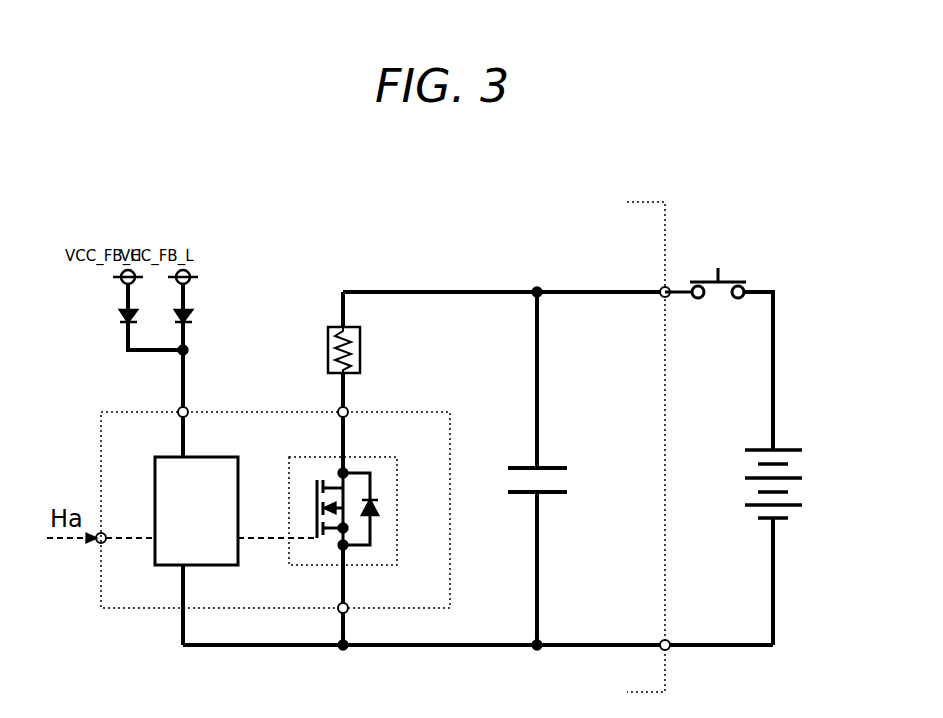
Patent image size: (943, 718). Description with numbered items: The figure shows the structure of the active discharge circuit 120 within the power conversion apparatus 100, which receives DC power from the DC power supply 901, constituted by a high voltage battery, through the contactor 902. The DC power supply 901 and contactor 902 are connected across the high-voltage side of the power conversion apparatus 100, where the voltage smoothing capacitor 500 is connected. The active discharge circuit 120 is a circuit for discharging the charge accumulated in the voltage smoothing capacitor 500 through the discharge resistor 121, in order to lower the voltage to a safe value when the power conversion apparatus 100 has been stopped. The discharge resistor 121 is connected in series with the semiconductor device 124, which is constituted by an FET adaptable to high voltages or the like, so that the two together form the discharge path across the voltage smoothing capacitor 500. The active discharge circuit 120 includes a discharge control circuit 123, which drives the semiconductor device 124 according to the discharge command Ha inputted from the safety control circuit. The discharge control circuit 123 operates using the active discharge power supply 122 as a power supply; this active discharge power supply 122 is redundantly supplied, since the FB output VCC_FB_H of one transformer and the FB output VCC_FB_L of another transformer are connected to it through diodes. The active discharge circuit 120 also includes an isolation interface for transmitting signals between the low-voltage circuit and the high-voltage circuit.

The power conversion apparatus 100 is at (667, 230).
The active discharge circuit 120 is at (113, 410).
The discharge resistor 121 is at (363, 352).
The active discharge power supply 122 is at (190, 406).
The discharge control circuit 123 is at (236, 511).
The semiconductor device 124 is at (405, 443).
The voltage smoothing capacitor 500 is at (558, 463).
The DC power supply 901 is at (788, 468).
The contactor 902 is at (735, 272).